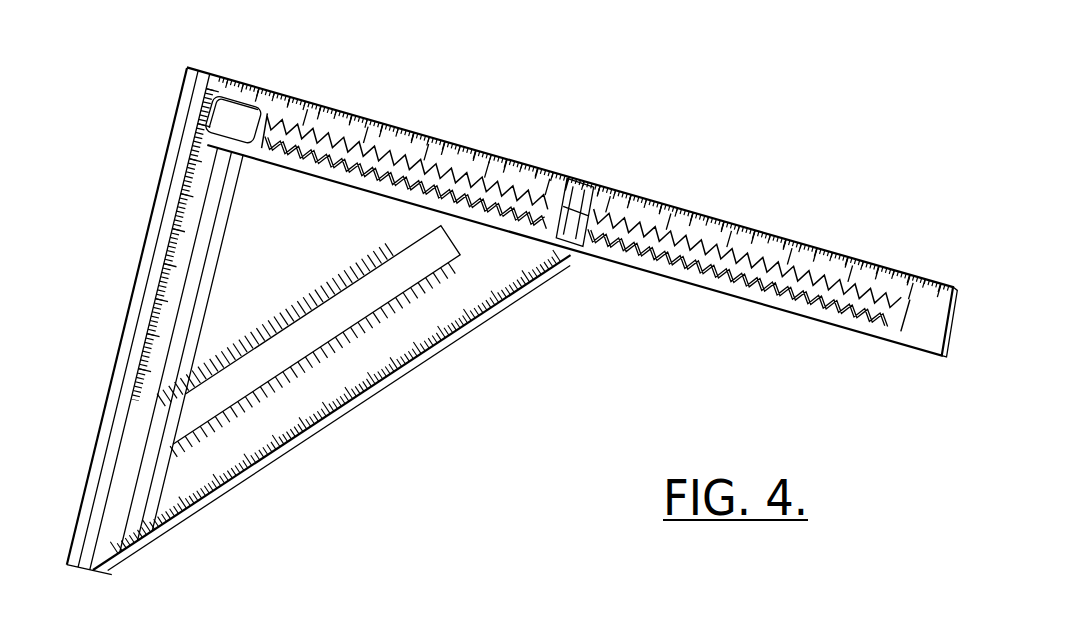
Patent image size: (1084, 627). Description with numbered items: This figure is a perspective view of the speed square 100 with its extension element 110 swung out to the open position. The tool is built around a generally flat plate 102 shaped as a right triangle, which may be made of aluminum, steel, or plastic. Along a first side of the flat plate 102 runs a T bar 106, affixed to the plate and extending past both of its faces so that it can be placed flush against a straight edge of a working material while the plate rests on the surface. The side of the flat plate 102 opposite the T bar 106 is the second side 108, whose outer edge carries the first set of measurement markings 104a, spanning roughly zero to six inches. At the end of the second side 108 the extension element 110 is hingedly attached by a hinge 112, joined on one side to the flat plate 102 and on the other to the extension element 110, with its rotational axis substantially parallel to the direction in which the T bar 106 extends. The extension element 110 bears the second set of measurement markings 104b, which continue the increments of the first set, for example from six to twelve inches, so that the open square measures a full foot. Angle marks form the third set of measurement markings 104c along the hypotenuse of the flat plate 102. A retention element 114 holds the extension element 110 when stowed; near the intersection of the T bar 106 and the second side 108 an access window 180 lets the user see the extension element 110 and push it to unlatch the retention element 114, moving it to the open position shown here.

The speed square 100 is at (456, 498).
The flat plate 102 is at (321, 420).
The first set of measurement markings 104a is at (428, 128).
The second set of measurement markings 104b is at (405, 358).
The third set of measurement markings 104c is at (837, 247).
The T bar 106 is at (138, 295).
The second side 108 is at (377, 121).
The extension element 110 is at (760, 293).
The hinge 112 is at (575, 216).
The retention element 114 is at (943, 327).
The access window 180 is at (240, 107).